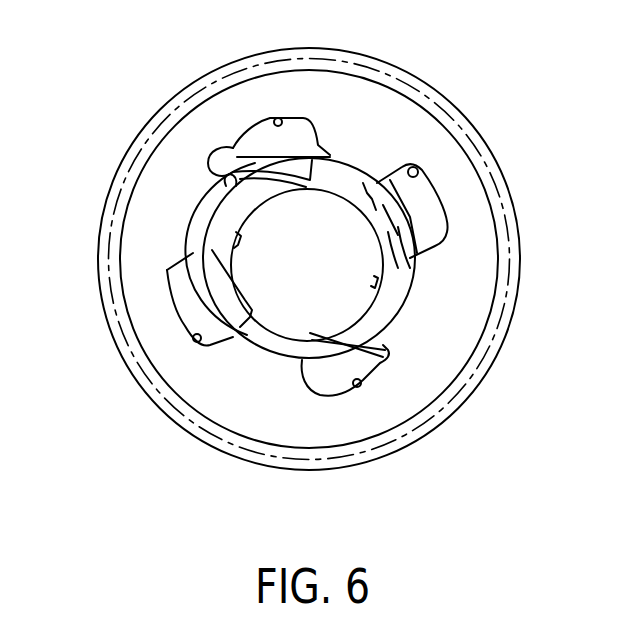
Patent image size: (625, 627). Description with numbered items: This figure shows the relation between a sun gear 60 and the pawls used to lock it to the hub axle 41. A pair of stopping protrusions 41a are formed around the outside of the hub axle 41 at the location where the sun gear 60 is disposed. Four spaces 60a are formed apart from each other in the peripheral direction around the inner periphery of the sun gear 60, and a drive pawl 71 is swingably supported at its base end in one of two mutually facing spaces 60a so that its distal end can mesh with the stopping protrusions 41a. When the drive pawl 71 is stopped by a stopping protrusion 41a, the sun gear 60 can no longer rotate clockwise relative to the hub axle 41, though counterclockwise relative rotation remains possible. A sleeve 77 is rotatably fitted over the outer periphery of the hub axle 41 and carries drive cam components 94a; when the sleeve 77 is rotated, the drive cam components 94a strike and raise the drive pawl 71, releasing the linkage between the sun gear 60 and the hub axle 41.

The sun gear 60 is at (456, 172).
The spaces 60a is at (280, 118).
The hub axle 41 is at (333, 248).
The stopping protrusions 41a is at (333, 177).
The drive cam components 94a is at (217, 243).
The drive pawl 71 is at (213, 158).
The sleeve 77 is at (218, 215).